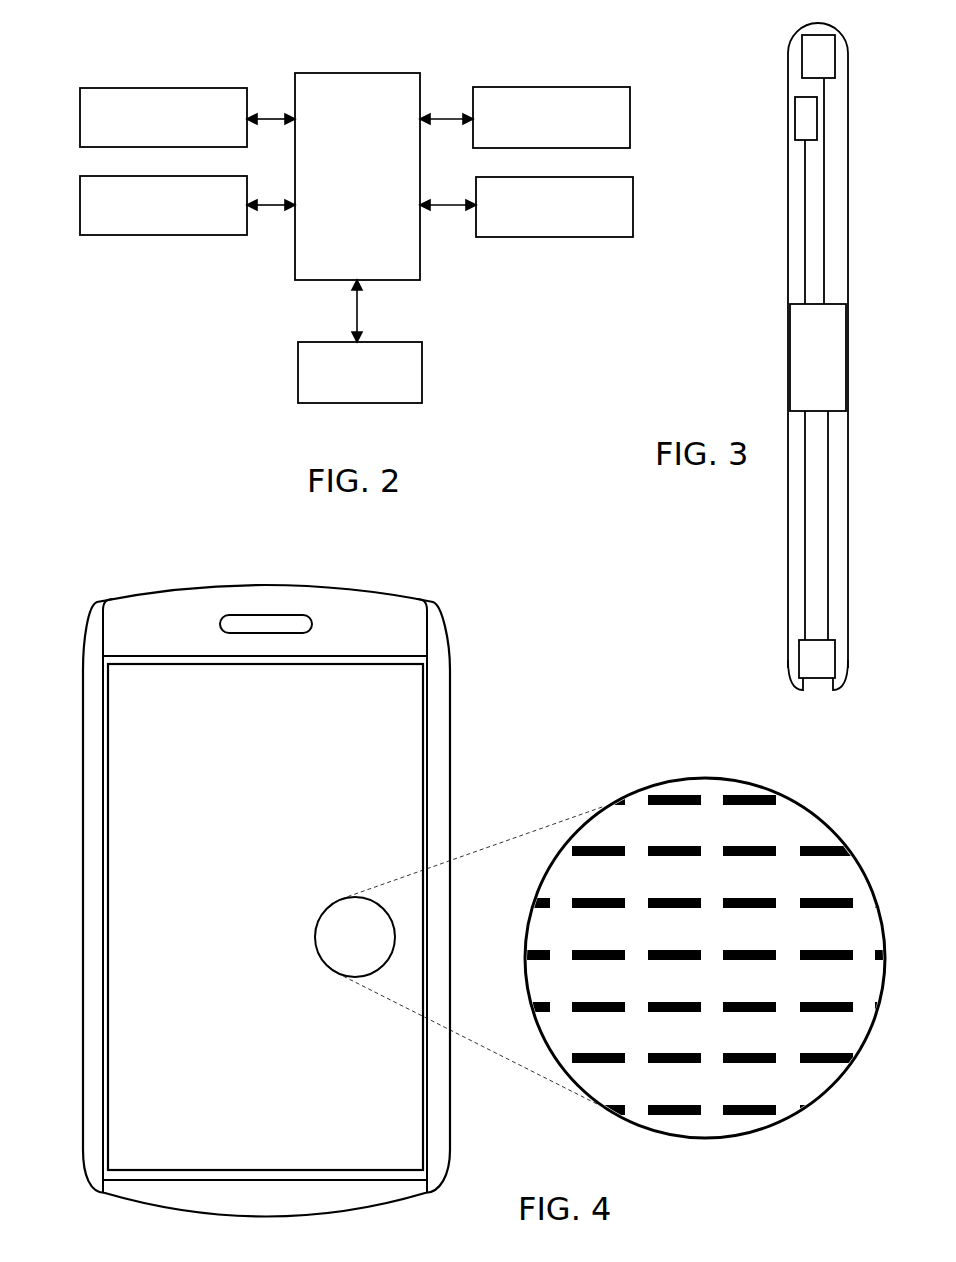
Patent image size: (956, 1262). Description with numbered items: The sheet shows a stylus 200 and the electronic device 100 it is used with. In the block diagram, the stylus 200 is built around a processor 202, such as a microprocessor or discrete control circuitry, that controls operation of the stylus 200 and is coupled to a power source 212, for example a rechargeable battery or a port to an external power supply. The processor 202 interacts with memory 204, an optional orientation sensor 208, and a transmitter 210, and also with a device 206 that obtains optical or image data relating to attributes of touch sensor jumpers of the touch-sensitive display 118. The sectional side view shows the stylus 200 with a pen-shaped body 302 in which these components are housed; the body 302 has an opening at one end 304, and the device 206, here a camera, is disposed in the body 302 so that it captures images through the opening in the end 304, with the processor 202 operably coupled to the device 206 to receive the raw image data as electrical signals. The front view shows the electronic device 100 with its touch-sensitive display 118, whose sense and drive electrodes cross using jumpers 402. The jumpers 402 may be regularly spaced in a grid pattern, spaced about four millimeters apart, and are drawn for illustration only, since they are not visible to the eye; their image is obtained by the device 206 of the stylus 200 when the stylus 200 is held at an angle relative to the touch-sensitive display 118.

In FIG. 4, the electronic device 100 is at (290, 901).
In FIG. 4, the touch-sensitive display 118 is at (423, 1147).
In FIG. 2, the stylus 200 is at (361, 262).
In FIG. 2, the processor 202 is at (295, 258).
In FIG. 3, the processor 202 is at (795, 340).
In FIG. 2, the memory 204 is at (633, 213).
In FIG. 2, the device 206 is at (630, 127).
In FIG. 3, the device 206 is at (799, 641).
In FIG. 2, the orientation sensor 208 is at (80, 128).
In FIG. 3, the orientation sensor 208 is at (795, 115).
In FIG. 2, the transmitter 210 is at (80, 215).
In FIG. 2, the power source 212 is at (382, 403).
In FIG. 3, the power source 212 is at (802, 65).
In FIG. 3, the body 302 is at (788, 170).
In FIG. 3, the end 304 is at (830, 690).
In FIG. 4, the jumpers 402 is at (593, 845).